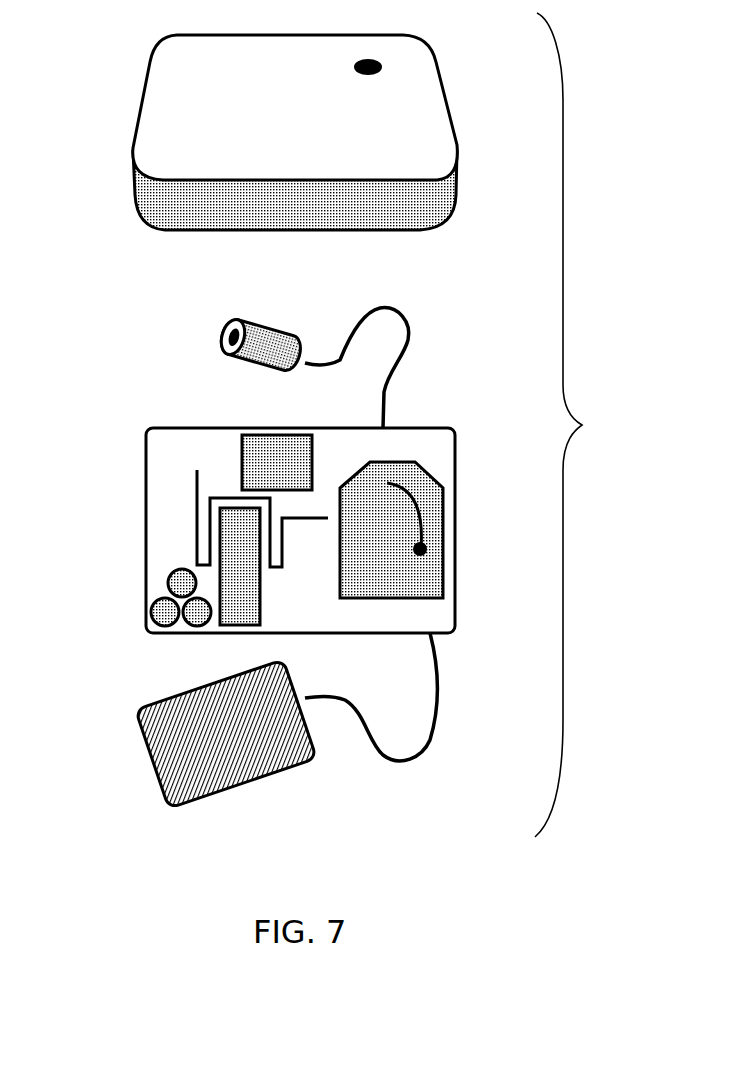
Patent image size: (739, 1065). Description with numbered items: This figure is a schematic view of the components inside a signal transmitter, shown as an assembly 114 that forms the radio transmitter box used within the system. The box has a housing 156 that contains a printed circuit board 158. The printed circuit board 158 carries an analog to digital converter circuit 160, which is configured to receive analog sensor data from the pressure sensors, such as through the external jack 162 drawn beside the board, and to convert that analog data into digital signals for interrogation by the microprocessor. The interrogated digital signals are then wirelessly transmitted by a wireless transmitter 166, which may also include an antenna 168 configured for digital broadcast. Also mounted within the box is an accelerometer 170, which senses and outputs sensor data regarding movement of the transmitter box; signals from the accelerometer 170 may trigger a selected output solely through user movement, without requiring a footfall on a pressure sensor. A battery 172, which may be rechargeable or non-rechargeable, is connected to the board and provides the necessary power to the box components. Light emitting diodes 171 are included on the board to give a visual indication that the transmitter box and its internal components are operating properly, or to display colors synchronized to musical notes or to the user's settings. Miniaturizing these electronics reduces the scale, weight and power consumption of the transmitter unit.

The sensor device assembly 114 is at (582, 425).
The housing 156 is at (147, 88).
The printed circuit board 158 is at (150, 506).
The analog to digital converter circuit 160 is at (193, 480).
The external jack 162 is at (265, 333).
The wireless transmitter 166 is at (402, 467).
The antenna 168 is at (415, 498).
The accelerometer 170 is at (260, 447).
The light emitting diodes 171 is at (163, 610).
The battery 172 is at (287, 777).